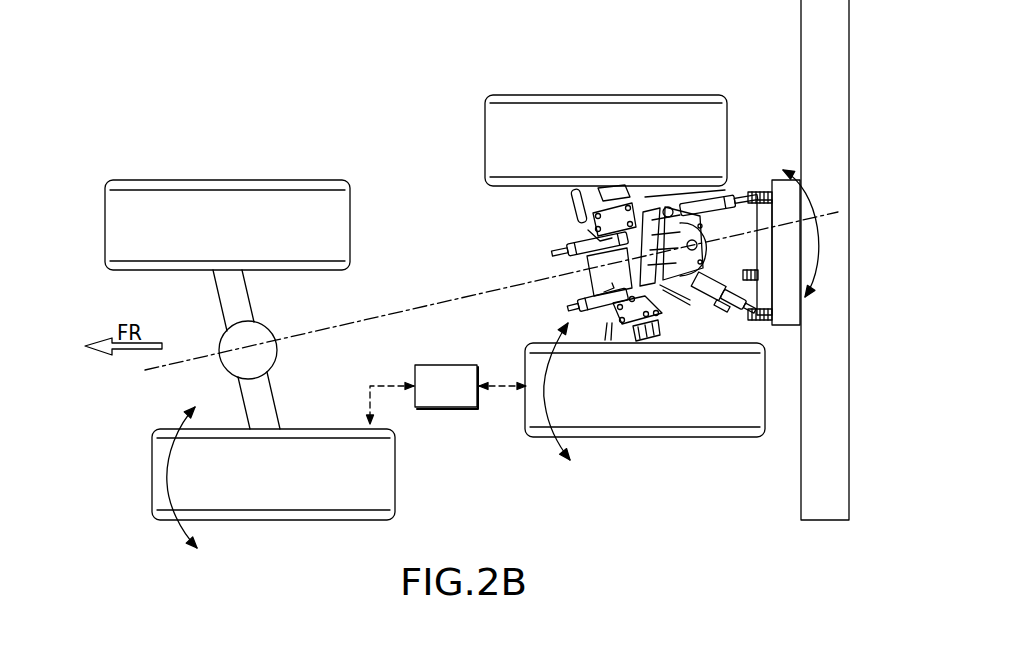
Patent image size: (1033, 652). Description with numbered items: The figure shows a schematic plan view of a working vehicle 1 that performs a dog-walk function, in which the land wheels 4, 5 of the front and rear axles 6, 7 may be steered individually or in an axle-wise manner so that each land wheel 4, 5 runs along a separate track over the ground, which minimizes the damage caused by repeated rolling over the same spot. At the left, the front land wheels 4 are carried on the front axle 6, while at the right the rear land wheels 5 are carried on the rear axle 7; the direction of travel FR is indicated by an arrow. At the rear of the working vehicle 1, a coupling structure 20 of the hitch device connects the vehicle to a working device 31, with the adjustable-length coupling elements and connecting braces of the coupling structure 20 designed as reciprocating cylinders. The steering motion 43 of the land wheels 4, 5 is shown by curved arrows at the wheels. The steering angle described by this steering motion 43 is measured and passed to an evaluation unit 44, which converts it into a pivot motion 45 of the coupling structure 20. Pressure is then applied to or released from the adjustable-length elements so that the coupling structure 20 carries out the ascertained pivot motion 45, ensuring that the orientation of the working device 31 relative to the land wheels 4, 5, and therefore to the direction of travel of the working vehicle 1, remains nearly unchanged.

The working vehicle 1 is at (413, 191).
The land wheel 4 is at (253, 212).
The land wheel 5 is at (670, 405).
The front axle 6 is at (253, 396).
The rear axle 7 is at (650, 328).
The coupling structure 20 is at (728, 262).
The working device 31 is at (820, 12).
The steering motion 43 is at (184, 408).
The evaluation unit 44 is at (447, 394).
The pivot motion 45 is at (782, 168).